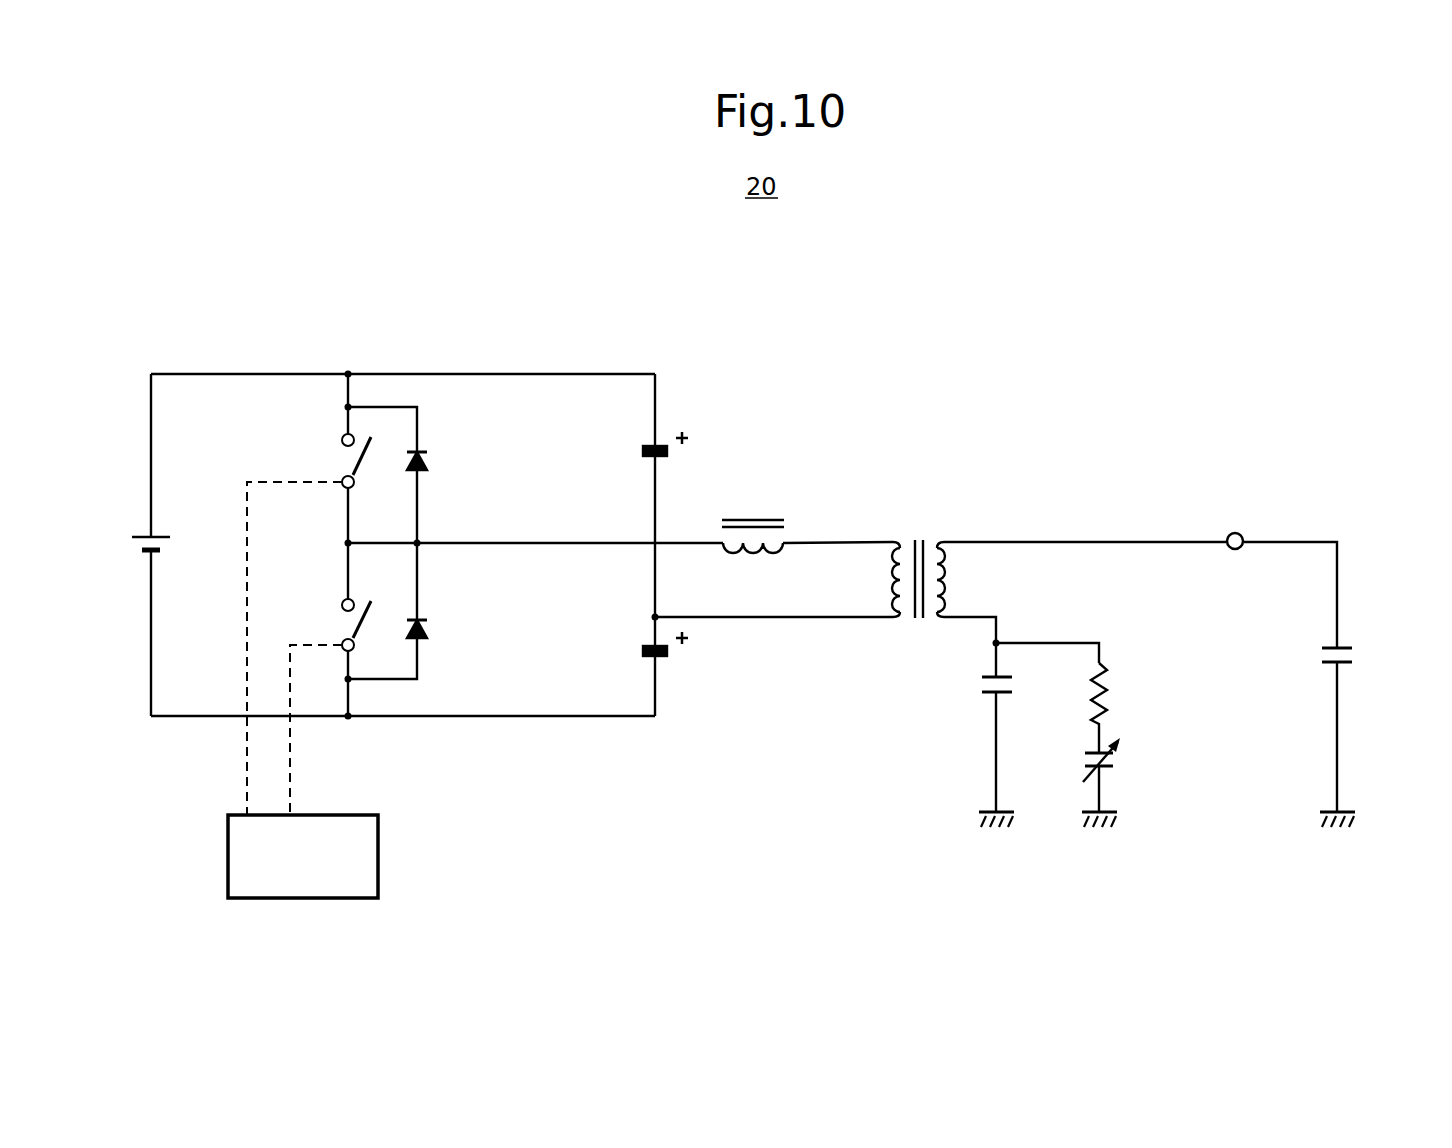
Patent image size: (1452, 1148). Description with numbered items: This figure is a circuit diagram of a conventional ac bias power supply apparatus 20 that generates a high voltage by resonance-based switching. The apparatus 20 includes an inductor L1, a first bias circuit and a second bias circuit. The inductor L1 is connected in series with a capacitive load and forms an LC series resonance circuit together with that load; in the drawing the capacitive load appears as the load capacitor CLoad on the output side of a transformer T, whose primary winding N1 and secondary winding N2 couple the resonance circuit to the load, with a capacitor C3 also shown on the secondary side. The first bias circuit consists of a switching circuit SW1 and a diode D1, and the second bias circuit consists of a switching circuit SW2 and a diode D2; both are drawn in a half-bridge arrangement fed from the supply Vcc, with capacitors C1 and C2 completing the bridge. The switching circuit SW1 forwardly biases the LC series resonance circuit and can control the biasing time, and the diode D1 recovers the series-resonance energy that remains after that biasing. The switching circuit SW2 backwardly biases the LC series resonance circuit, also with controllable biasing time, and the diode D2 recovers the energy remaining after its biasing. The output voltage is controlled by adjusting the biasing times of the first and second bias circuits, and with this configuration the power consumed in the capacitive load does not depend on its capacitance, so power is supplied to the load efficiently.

The ac bias power supply apparatus 20 is at (380, 858).
The DC power supply Vcc is at (179, 545).
The switching circuit SW1 is at (324, 458).
The switching circuit SW2 is at (324, 629).
The diode D1 is at (411, 475).
The diode D2 is at (411, 611).
The first capacitor C1 is at (642, 448).
The second capacitor C2 is at (642, 648).
The inductor L1 is at (753, 517).
The transformer T is at (921, 560).
The primary winding N1 is at (777, 579).
The secondary winding N2 is at (1081, 602).
The third capacitor C3 is at (1015, 735).
The load capacitor CLoad is at (1344, 684).